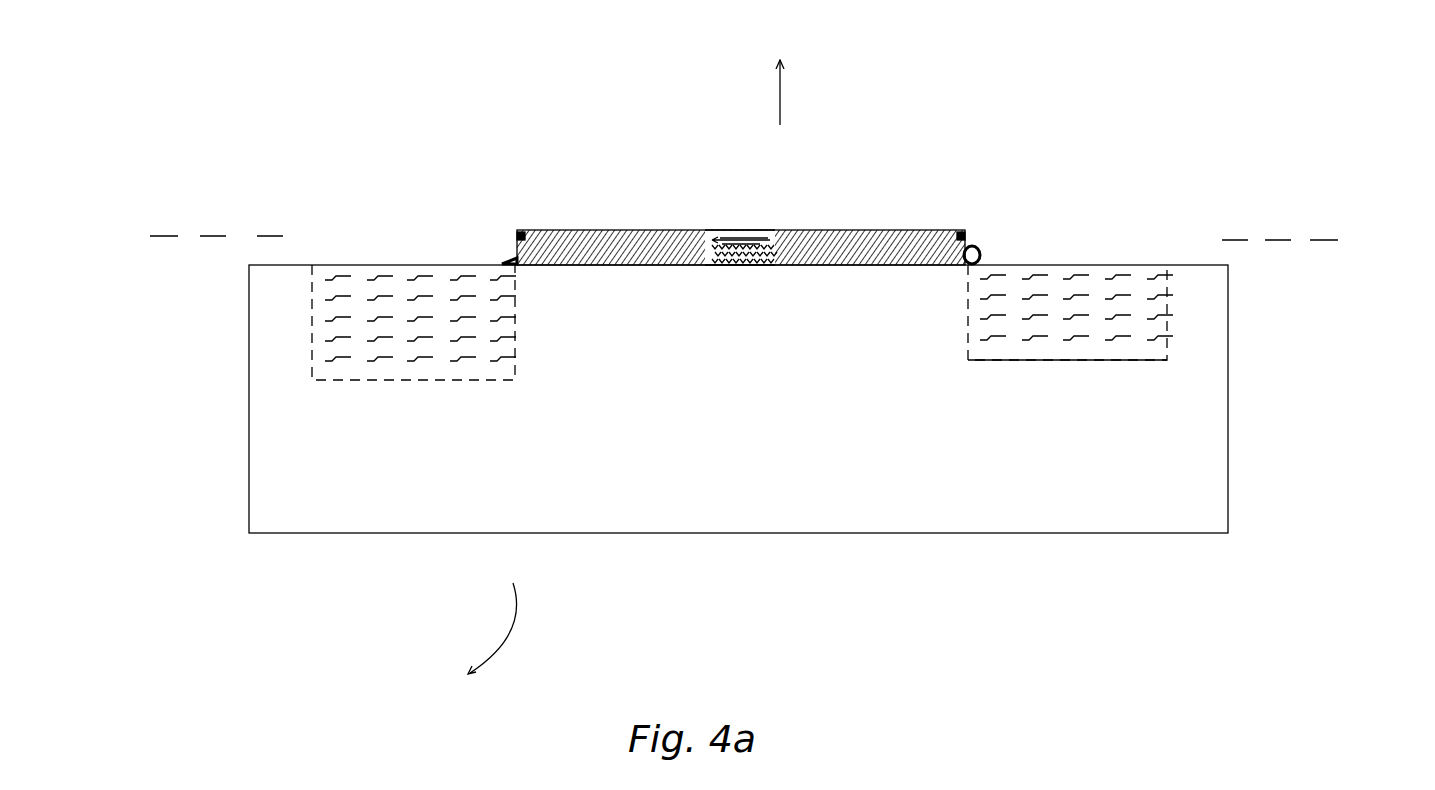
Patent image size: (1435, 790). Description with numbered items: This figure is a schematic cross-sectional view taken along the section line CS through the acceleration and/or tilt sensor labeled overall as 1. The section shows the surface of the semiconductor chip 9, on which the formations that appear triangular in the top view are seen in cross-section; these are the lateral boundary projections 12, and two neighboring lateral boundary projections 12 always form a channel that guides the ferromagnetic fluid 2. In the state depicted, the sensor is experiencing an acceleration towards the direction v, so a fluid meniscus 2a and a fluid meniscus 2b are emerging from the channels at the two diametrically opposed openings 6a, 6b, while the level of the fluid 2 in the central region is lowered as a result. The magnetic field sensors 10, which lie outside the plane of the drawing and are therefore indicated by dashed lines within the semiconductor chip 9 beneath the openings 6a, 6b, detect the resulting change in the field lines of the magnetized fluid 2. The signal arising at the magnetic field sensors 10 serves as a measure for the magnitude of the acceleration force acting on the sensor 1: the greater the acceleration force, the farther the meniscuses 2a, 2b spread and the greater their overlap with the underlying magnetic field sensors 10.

The acceleration sensor 1 is at (408, 725).
The ferromagnetic fluid 2 is at (752, 240).
The fluid meniscus 2a is at (512, 257).
The fluid meniscus 2b is at (978, 250).
The opening 6a is at (517, 232).
The opening 6b is at (965, 232).
The semiconductor chip 9 is at (834, 518).
The magnetic field sensors 10 is at (352, 290).
The lateral boundary projections 12 is at (630, 207).
The section line CS is at (733, 237).
The acceleration direction v is at (778, 75).